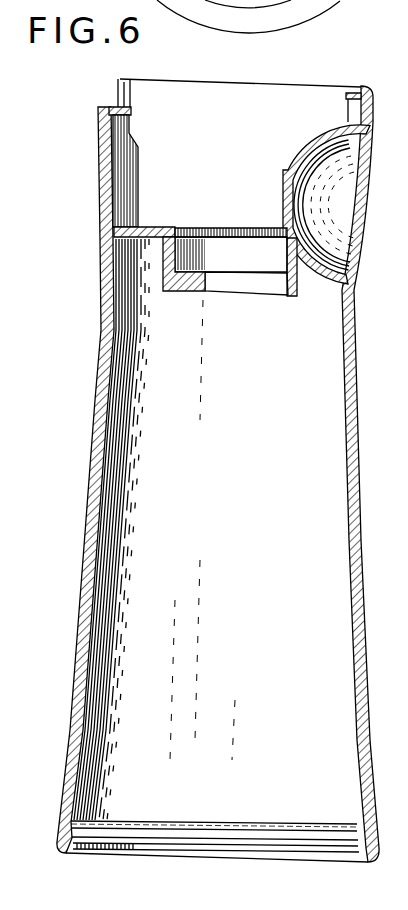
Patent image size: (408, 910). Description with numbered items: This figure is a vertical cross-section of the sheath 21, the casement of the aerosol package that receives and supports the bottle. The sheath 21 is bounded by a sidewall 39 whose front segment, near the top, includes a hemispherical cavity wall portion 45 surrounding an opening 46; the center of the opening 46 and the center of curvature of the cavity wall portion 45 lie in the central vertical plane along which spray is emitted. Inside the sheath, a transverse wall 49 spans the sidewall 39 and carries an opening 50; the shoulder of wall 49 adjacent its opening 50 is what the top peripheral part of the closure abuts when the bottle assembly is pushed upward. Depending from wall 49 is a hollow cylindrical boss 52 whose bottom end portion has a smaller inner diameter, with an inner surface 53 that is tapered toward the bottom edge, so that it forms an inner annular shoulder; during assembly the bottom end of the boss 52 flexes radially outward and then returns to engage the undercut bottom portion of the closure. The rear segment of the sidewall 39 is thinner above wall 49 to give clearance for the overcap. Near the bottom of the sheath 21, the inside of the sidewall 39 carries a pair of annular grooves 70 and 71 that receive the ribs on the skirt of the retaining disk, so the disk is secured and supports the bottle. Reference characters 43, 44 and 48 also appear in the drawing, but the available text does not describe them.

The sheath 21 is at (82, 485).
The sidewall 39 is at (100, 350).
The bead 43 is at (352, 92).
The bead 44 is at (113, 101).
The hemispherical cavity wall portion 45 is at (287, 228).
The opening 46 is at (288, 172).
The cavity 48 is at (208, 132).
The wall 49 is at (150, 228).
The opening 50 is at (233, 265).
The hollow boss 52 is at (163, 262).
The inner surface 53 is at (285, 297).
The annular groove 70 is at (118, 822).
The annular groove 71 is at (133, 843).